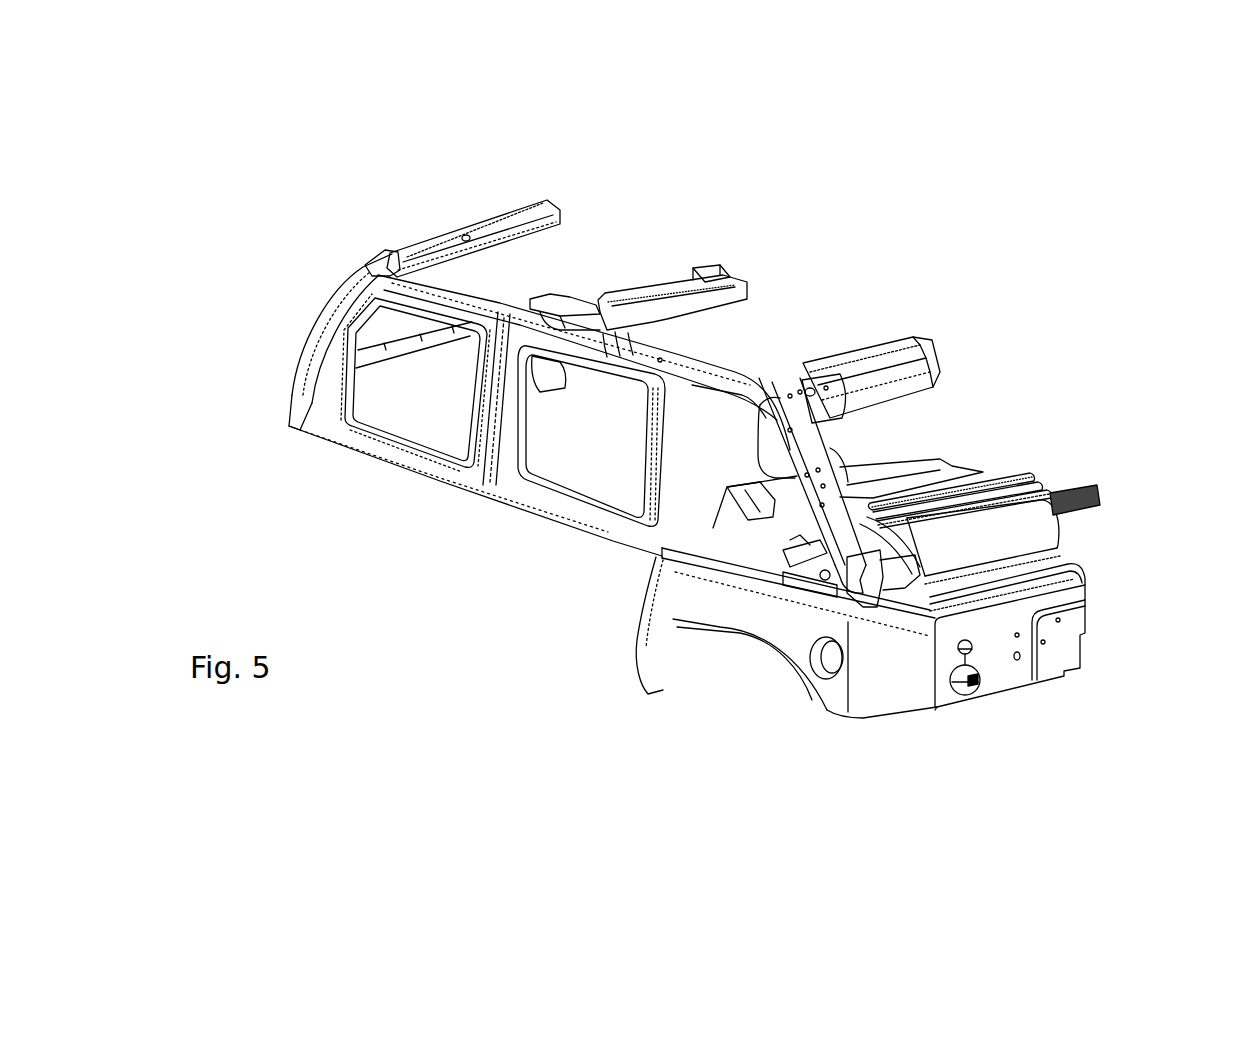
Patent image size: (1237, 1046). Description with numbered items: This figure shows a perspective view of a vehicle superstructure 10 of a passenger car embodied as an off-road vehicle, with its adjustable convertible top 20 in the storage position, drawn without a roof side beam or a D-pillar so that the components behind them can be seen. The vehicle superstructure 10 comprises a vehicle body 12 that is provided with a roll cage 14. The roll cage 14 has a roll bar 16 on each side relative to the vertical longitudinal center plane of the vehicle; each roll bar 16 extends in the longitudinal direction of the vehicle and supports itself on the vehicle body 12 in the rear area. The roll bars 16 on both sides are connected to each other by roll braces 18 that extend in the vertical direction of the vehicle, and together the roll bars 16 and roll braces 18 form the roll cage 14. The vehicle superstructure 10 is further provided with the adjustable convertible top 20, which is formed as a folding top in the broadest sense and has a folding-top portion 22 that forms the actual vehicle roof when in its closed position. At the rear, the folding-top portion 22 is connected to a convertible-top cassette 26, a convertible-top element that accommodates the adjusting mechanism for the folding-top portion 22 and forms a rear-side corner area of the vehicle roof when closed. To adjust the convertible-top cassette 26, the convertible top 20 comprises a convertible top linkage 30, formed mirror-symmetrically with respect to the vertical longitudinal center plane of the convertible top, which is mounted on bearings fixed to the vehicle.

The vehicle superstructure 10 is at (652, 246).
The vehicle body 12 is at (657, 647).
The roll cage 14 is at (700, 361).
The roll bar 16 is at (818, 443).
The roll brace 18 is at (686, 290).
The convertible top 20 is at (1012, 333).
The folding-top portion 22 is at (1030, 477).
The convertible-top cassette 26 is at (1065, 533).
The convertible top linkage 30 is at (791, 568).